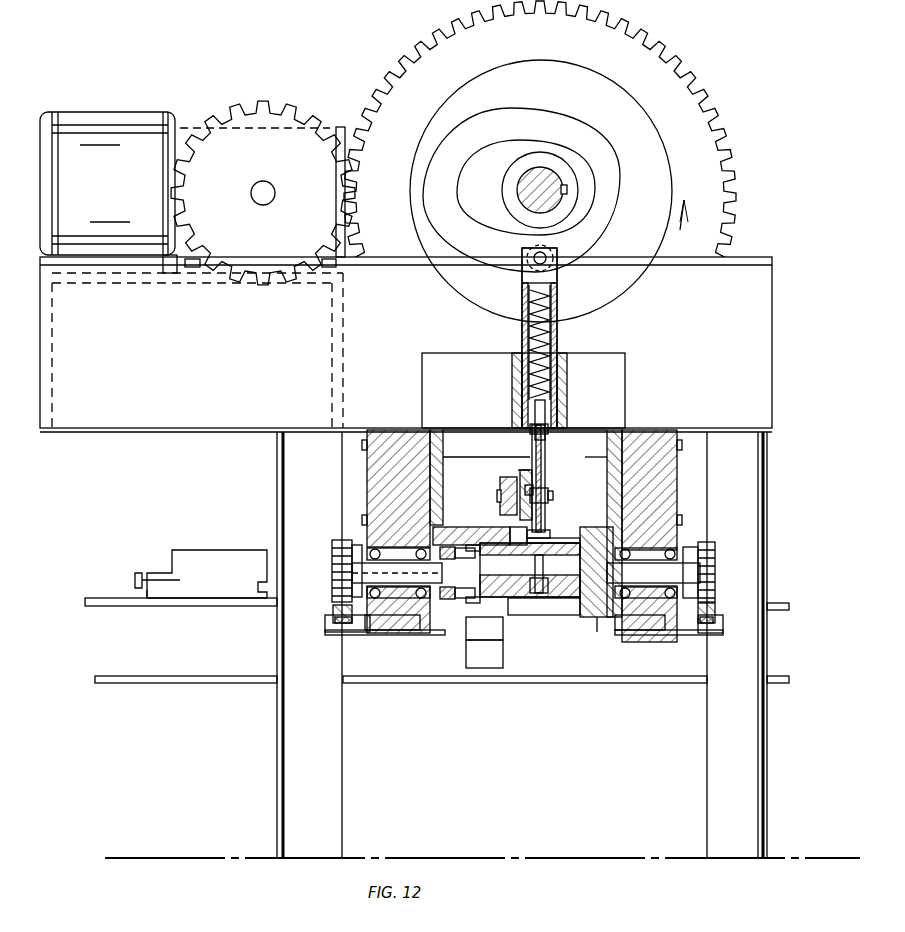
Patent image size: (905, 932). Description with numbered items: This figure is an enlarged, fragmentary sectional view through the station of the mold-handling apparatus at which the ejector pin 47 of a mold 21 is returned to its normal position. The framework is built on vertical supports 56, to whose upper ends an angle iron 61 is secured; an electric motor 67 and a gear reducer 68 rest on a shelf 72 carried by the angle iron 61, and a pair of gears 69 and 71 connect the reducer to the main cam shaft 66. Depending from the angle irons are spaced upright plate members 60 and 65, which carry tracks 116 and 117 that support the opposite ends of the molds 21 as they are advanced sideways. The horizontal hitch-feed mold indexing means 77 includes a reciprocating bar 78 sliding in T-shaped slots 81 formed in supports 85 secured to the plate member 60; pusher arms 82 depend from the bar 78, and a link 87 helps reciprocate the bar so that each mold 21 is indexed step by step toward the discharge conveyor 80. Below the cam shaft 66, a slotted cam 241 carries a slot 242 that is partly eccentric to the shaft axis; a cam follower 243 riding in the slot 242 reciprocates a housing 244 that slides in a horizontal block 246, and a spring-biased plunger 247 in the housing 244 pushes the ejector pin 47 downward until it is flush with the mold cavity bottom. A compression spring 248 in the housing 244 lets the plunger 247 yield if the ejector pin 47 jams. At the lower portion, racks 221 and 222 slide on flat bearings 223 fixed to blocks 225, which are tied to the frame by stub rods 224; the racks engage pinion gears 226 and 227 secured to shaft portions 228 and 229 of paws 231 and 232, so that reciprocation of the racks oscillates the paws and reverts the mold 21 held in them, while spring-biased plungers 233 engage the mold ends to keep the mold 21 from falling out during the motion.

The mold 21 is at (556, 543).
The shouldered ejector pin 47 is at (543, 566).
The vertical supports 56 is at (343, 741).
The plate member 60 is at (443, 458).
The angle iron 61 is at (738, 262).
The plate member 65 is at (607, 455).
The main cam shaft 66 is at (520, 182).
The electric motor 67 is at (130, 122).
The gear reducer 68 is at (340, 127).
The gear 69 is at (705, 112).
The gear 71 is at (255, 105).
The shelf 72 is at (270, 283).
The mold indexing means 77 is at (517, 470).
The reciprocating bar 78 is at (533, 483).
The conveyor 80 is at (124, 598).
The T-shaped slots 81 is at (524, 470).
The pusher arms 82 is at (553, 500).
The supports 85 is at (455, 458).
The link 87 is at (500, 485).
The track 116 is at (483, 548).
The track 117 is at (597, 632).
The rack 221 is at (712, 612).
The rack 222 is at (333, 610).
The flat bearings 223 is at (336, 620).
The stub rods 224 is at (340, 636).
The blocks 225 is at (402, 432).
The pinion gear 226 is at (715, 550).
The pinion gear 227 is at (332, 577).
The shaft portion 228 is at (650, 563).
The shaft portion 229 is at (392, 563).
The paw 231 is at (590, 617).
The paw 232 is at (508, 616).
The spring-biased plungers 233 is at (448, 547).
The slotted cam 241 is at (652, 128).
The slot 242 is at (575, 125).
The cam follower 243 is at (548, 250).
The housing 244 is at (556, 283).
The horizontal block 246 is at (480, 360).
The spring-biased plunger 247 is at (546, 456).
The compression spring 248 is at (557, 338).